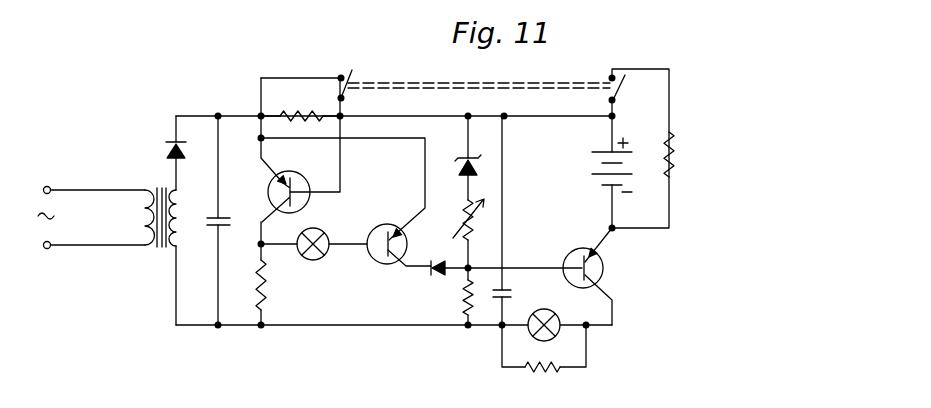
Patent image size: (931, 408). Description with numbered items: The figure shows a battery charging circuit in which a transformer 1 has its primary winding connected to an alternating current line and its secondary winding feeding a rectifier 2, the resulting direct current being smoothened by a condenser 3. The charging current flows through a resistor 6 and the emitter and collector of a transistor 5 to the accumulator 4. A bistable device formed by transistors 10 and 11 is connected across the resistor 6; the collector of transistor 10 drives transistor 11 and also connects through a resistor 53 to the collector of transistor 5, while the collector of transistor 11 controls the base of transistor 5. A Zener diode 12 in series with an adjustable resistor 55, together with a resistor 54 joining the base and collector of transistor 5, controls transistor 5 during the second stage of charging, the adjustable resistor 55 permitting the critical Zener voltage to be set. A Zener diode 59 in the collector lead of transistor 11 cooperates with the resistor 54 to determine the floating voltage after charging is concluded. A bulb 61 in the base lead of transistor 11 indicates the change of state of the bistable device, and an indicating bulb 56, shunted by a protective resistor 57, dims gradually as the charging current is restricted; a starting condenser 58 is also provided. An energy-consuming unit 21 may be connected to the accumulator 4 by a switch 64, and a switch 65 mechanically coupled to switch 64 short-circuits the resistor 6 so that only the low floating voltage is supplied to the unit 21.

The transformer 1 is at (105, 249).
The rectifier 2 is at (163, 151).
The condenser 3 is at (210, 232).
The accumulator 4 is at (592, 157).
The transistor 5 is at (605, 268).
The resistor 6 is at (310, 112).
The transistor 10 is at (313, 162).
The transistor 11 is at (407, 233).
The Zener diode 12 is at (484, 148).
The energy-consuming unit 21 is at (675, 158).
The resistor 53 is at (268, 287).
The resistor 54 is at (462, 294).
The adjustable resistor 55 is at (478, 229).
The indicating bulb 56 is at (558, 316).
The protective resistor 57 is at (548, 370).
The starting condenser 58 is at (515, 296).
The Zener diode 59 is at (442, 247).
The bulb 61 is at (318, 262).
The switch 64 is at (618, 87).
The switch 65 is at (363, 58).